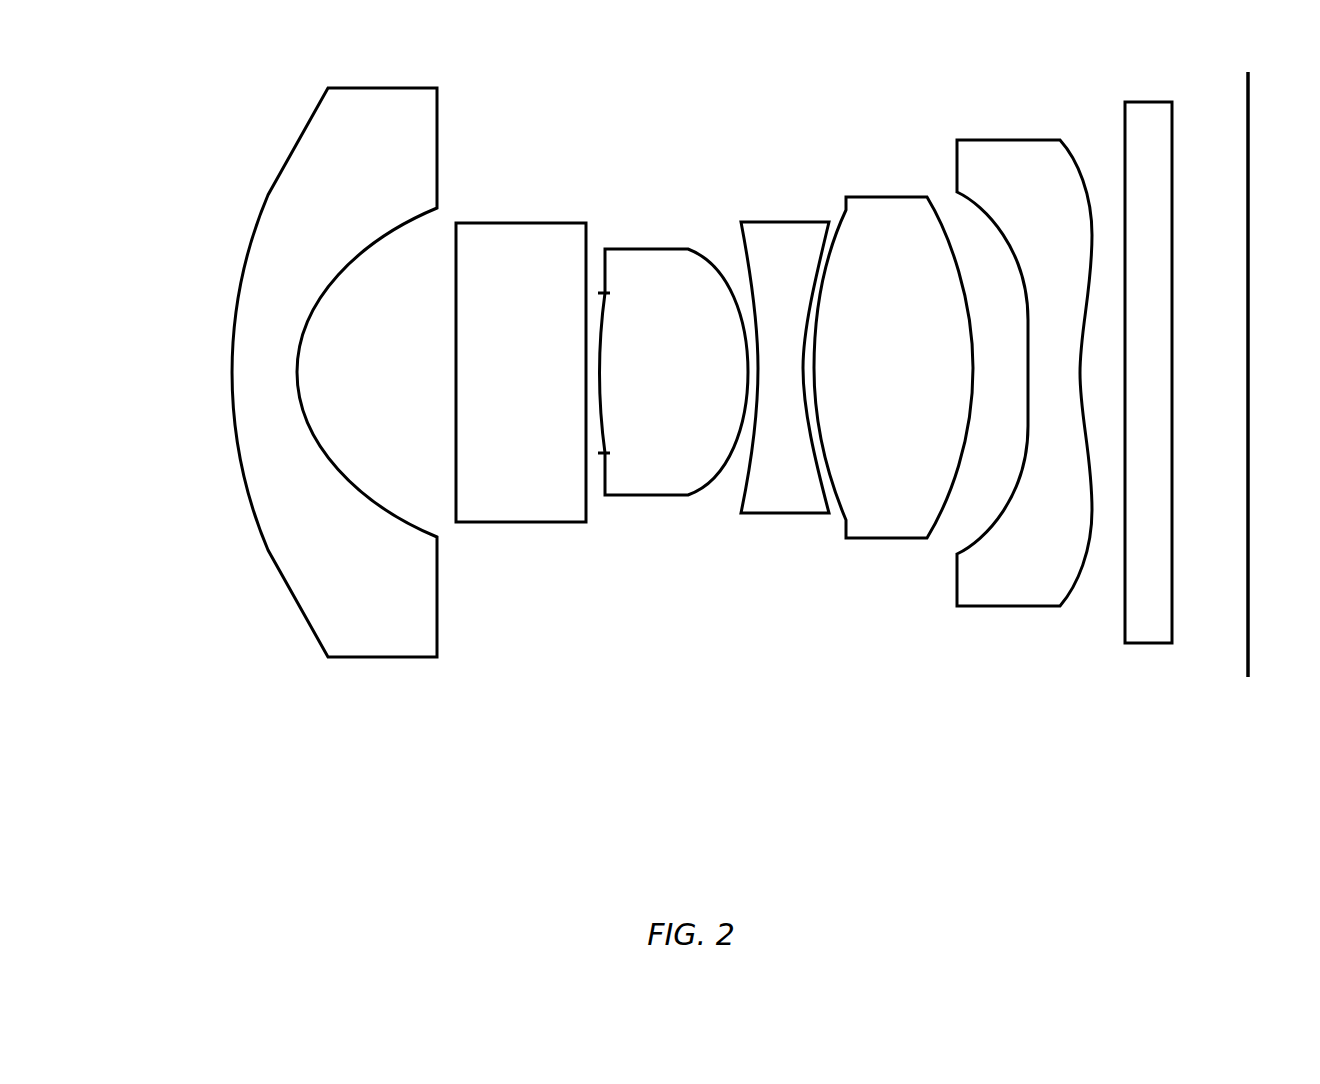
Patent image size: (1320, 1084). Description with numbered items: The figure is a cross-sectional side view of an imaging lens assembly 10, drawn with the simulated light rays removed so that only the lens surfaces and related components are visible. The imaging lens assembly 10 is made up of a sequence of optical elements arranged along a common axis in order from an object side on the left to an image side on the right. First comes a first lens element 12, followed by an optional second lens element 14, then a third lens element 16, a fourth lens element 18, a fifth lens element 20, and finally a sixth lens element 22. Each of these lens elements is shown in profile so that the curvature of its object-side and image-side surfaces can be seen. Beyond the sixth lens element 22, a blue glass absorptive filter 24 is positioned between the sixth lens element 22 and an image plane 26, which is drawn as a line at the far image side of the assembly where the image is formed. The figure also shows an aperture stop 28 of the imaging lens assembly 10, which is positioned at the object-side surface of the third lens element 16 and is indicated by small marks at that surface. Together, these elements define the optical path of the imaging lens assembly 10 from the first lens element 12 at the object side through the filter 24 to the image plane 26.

The imaging lens assembly 10 is at (236, 126).
The first lens element 12 is at (382, 657).
The second lens element 14 is at (519, 522).
The third lens element 16 is at (644, 495).
The fourth lens element 18 is at (782, 513).
The fifth lens element 20 is at (883, 538).
The sixth lens element 22 is at (1005, 606).
The blue glass absorptive filter 24 is at (1147, 643).
The image plane 26 is at (1248, 677).
The aperture stop 28 is at (605, 293).